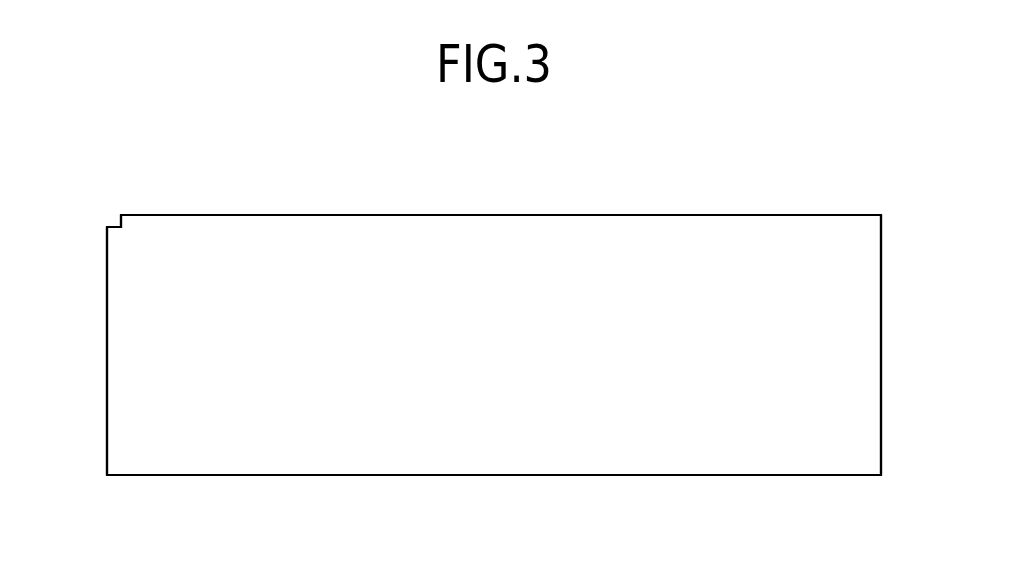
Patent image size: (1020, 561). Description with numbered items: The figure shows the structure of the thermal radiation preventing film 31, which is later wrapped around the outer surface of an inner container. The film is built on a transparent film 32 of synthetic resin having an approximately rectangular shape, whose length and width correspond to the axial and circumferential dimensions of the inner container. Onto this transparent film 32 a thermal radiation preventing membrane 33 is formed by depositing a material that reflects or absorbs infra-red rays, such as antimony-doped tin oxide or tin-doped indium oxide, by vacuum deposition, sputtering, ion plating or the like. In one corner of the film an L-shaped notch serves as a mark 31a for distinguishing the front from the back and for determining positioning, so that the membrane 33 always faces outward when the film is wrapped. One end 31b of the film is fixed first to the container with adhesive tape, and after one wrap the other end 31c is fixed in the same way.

The thermal radiation preventing film 31 is at (571, 198).
The mark for distinguishing the front from the back and for determining positioning 31a is at (112, 224).
The one end of the thermal radiation preventing film 31b is at (107, 393).
The other end of the thermal radiation preventing film 31c is at (881, 398).
The transparent film 32 is at (297, 213).
The thermal radiation preventing membrane 33 is at (636, 445).